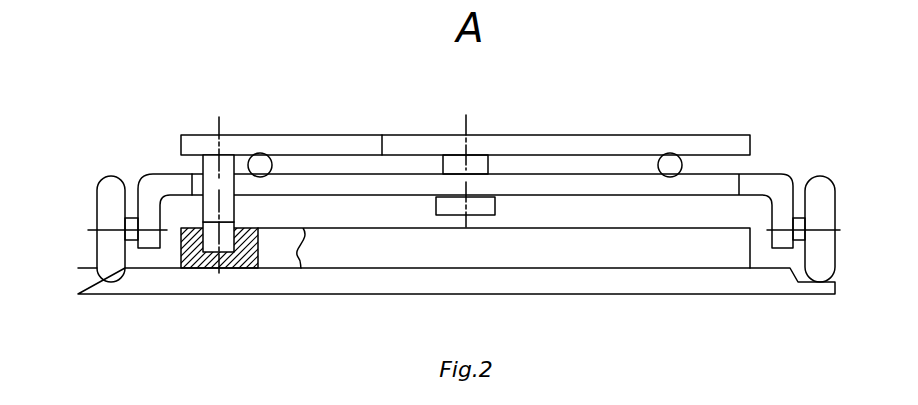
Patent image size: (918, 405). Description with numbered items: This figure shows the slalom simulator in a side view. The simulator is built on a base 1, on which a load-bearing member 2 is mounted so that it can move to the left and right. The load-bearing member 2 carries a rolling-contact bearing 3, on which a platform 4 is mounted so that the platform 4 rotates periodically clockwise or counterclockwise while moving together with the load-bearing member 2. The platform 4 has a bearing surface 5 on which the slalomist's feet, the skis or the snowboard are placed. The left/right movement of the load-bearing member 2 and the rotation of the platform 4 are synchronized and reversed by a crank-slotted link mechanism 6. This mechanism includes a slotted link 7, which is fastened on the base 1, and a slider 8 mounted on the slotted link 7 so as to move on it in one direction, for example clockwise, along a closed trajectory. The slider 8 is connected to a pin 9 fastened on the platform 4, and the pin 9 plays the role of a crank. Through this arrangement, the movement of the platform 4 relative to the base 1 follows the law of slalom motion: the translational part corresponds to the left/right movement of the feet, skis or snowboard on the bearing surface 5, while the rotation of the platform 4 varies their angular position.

The base 1 is at (568, 285).
The load-bearing member 2 is at (575, 182).
The rolling-contact bearing 3 is at (818, 190).
The platform 4 is at (307, 146).
The bearing surface 5 is at (350, 146).
The crank-slotted link mechanism 6 is at (173, 162).
The slotted link 7 is at (245, 252).
The slider 8 is at (214, 244).
The pin 9 is at (213, 170).